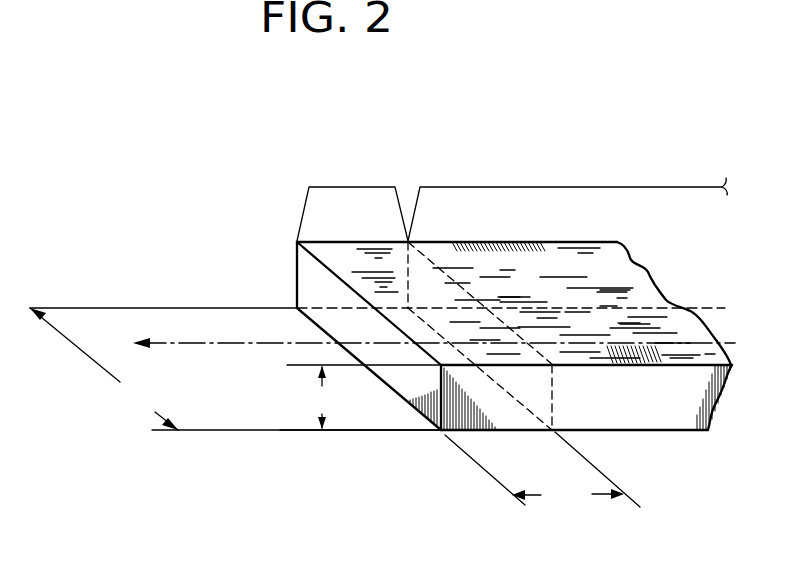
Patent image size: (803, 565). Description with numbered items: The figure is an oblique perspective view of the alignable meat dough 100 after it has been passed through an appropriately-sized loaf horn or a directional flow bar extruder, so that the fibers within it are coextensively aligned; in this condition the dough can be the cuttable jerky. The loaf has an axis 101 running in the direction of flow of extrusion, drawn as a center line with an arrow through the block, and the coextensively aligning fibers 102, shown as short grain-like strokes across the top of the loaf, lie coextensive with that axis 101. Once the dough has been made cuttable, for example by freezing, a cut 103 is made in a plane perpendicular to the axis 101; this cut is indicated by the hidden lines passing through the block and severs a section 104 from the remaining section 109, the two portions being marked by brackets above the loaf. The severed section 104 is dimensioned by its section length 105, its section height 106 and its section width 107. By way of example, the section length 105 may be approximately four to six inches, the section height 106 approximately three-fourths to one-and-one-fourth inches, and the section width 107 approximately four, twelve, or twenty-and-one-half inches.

The dough with coextensively aligned fibers 100 is at (477, 172).
The axis in the direction of flow of extrusion 101 is at (183, 345).
The coextensively aligning fibers 102 is at (348, 268).
The cut 103 is at (552, 408).
The section 104 is at (355, 186).
The section length 105 is at (542, 470).
The section height 106 is at (360, 397).
The section width 107 is at (235, 369).
The remaining section 109 is at (607, 186).